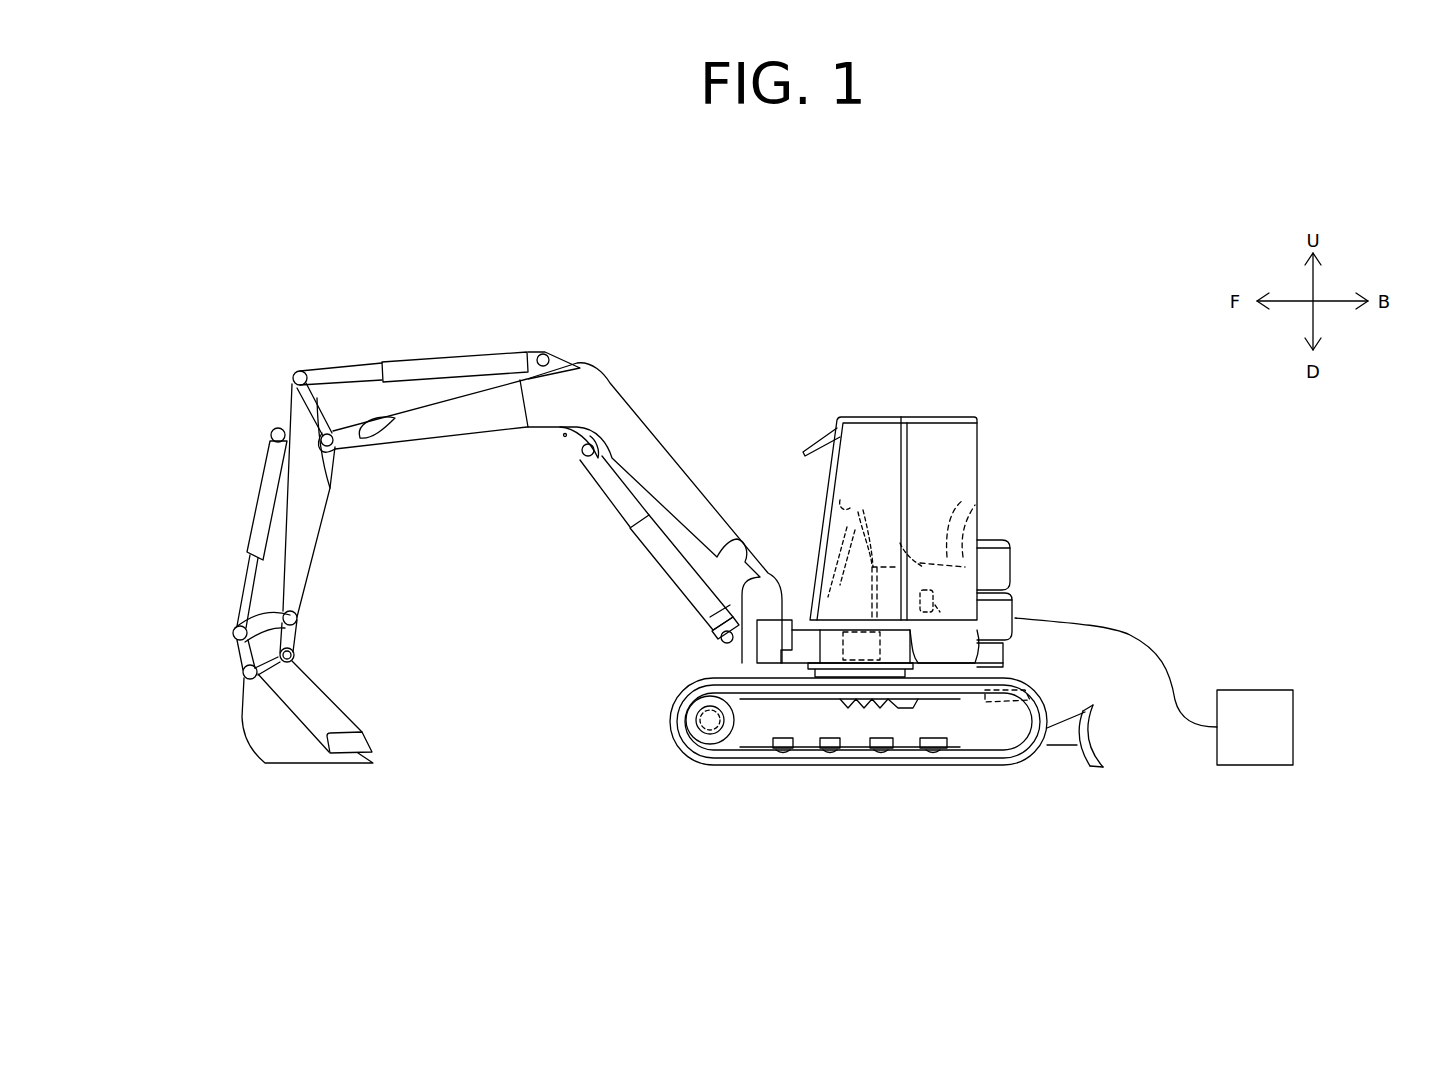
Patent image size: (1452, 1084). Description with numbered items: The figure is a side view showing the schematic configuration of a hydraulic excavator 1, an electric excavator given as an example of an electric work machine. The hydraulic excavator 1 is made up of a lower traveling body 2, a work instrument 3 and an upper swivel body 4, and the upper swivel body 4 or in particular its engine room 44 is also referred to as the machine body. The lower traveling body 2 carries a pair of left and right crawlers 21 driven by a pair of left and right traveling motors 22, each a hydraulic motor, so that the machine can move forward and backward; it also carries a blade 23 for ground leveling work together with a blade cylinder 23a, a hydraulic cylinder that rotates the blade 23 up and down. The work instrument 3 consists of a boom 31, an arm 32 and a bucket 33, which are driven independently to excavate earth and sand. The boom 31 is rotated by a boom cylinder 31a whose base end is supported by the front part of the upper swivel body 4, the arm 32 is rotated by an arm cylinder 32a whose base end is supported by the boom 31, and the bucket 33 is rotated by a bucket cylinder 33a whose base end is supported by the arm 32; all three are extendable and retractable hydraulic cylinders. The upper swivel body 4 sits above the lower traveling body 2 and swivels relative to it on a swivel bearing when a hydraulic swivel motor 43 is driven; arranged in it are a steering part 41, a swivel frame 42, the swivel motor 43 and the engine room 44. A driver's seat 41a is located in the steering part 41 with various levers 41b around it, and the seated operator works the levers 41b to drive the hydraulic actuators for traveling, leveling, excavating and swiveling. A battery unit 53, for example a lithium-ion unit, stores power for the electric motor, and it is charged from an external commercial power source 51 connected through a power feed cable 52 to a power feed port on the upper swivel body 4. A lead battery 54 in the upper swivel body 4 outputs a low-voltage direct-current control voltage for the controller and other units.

The hydraulic excavator 1 is at (935, 312).
The lower traveling body 2 is at (666, 692).
The work instrument 3 is at (436, 506).
The upper swivel body 4 is at (1046, 447).
The crawler 21 is at (666, 703).
The traveling motor 22 is at (708, 748).
The blade 23 is at (1065, 712).
The blade cylinder 23a is at (1003, 682).
The boom 31 is at (477, 432).
The boom cylinder 31a is at (680, 580).
The arm 32 is at (309, 543).
The arm cylinder 32a is at (452, 363).
The bucket 33 is at (250, 741).
The bucket cylinder 33a is at (267, 497).
The steering part 41 is at (896, 411).
The driver's seat 41a is at (980, 507).
The lever 41b is at (855, 505).
The swivel frame 42 is at (750, 670).
The swivel motor 43 is at (837, 665).
The engine room 44 is at (1003, 543).
The commercial power source 51 is at (1297, 700).
The power feed cable 52 is at (1140, 636).
The battery unit 53 is at (940, 610).
The lead battery 54 is at (933, 598).